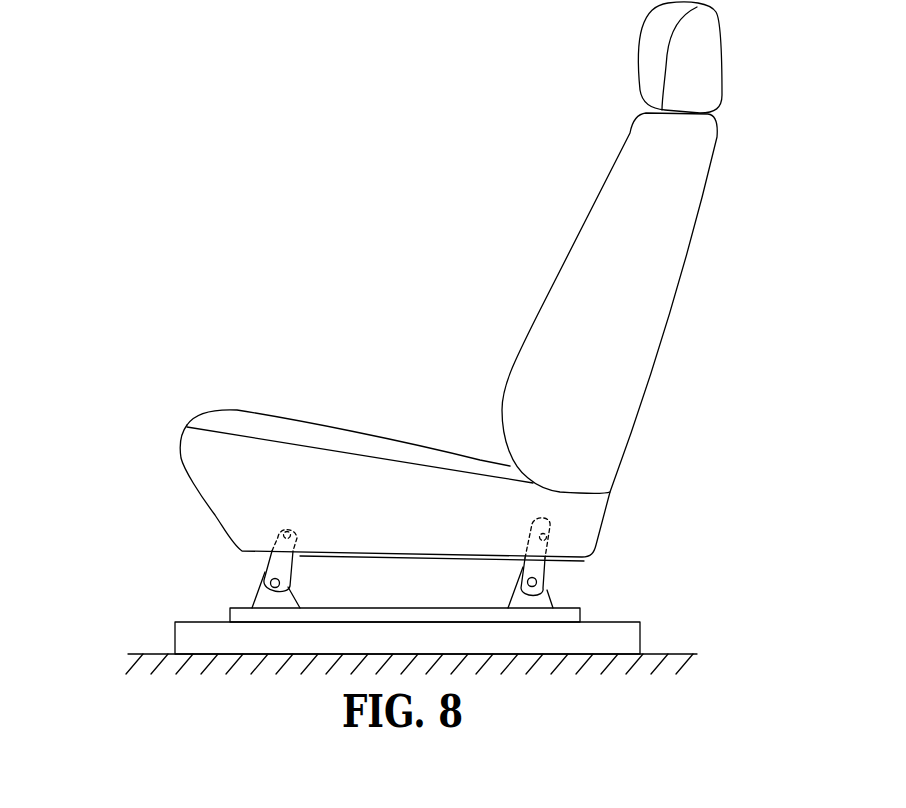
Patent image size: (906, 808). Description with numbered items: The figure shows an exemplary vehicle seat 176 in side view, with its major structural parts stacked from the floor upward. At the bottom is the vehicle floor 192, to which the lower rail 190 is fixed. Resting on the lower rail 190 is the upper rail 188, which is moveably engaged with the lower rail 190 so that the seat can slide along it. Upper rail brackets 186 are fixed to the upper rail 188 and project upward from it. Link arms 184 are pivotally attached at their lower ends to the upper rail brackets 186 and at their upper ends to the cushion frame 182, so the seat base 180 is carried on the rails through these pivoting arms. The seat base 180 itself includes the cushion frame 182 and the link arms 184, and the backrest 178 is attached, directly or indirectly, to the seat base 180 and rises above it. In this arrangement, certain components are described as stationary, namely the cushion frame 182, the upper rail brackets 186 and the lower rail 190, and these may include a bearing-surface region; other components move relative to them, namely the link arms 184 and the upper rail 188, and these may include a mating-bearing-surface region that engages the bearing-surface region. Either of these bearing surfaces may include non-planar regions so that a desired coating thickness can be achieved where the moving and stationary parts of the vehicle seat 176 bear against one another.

The vehicle seat 176 is at (294, 92).
The backrest 178 is at (640, 255).
The seat base 180 is at (189, 420).
The cushion frame 182 is at (314, 432).
The link arms 184 is at (293, 562).
The upper rail brackets 186 is at (255, 597).
The upper rail 188 is at (227, 617).
The lower rail 190 is at (642, 640).
The vehicle floor 192 is at (138, 650).